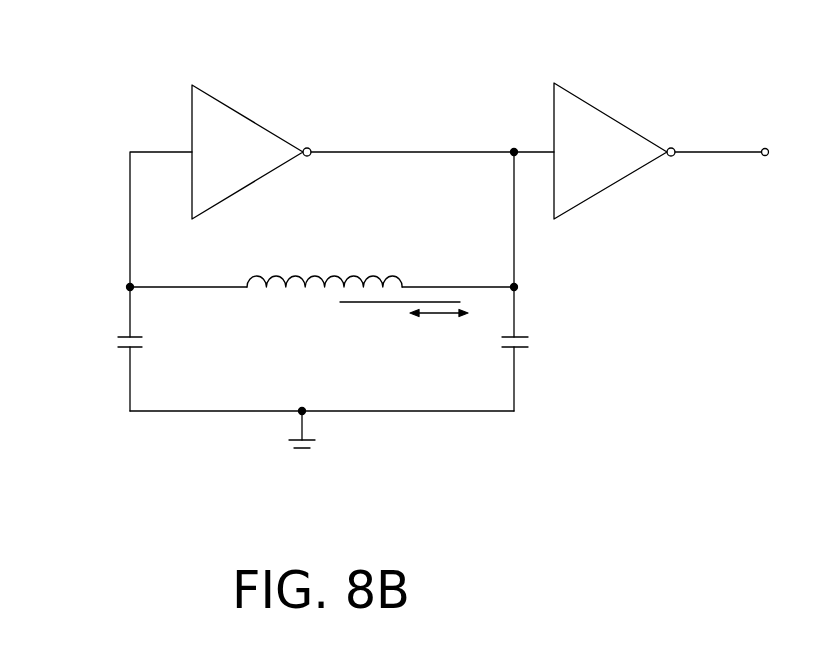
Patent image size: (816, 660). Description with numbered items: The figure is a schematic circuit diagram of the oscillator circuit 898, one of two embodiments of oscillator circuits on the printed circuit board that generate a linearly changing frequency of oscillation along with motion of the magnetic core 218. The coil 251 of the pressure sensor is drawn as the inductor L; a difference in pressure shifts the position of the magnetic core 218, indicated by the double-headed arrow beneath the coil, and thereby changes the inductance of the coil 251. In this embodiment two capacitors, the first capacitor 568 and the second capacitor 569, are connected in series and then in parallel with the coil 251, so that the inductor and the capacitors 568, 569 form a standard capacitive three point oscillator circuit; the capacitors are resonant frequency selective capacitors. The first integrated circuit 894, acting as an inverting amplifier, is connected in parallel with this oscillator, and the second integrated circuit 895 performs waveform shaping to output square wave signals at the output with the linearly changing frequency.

The oscillator circuit 898 is at (97, 112).
The integrated circuit U1 894 is at (250, 120).
The integrated circuit U2 895 is at (600, 108).
The coil 251 is at (373, 277).
The magnetic core 218 is at (388, 302).
The capacitor C1 568 is at (123, 337).
The capacitor C2 569 is at (520, 335).